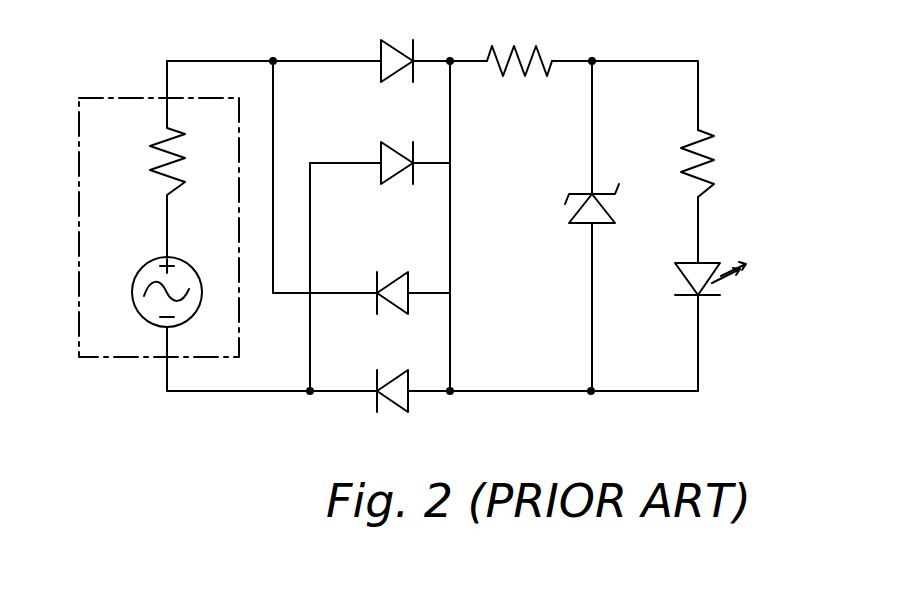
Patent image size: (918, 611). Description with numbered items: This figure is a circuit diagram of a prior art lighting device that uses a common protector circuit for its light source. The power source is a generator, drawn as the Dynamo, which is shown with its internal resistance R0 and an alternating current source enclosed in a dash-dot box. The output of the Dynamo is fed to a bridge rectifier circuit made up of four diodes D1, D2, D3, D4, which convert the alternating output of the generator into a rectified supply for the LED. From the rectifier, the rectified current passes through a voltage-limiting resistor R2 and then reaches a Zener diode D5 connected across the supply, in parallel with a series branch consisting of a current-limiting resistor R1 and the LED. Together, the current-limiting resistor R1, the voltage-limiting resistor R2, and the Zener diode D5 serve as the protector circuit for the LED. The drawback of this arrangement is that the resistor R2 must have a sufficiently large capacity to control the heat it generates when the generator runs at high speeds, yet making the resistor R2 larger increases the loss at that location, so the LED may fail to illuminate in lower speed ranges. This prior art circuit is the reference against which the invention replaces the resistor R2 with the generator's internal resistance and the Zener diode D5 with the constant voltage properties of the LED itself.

The generator Dynamo is at (207, 206).
The internal resistance R0 is at (144, 159).
The diode D1 is at (385, 46).
The diode D2 is at (386, 147).
The diode D3 is at (381, 279).
The diode D4 is at (380, 376).
The voltage-limiting resistor R2 is at (519, 45).
The Zener diode D5 is at (609, 226).
The current-limiting resistor R1 is at (717, 163).
The element LED is at (719, 294).